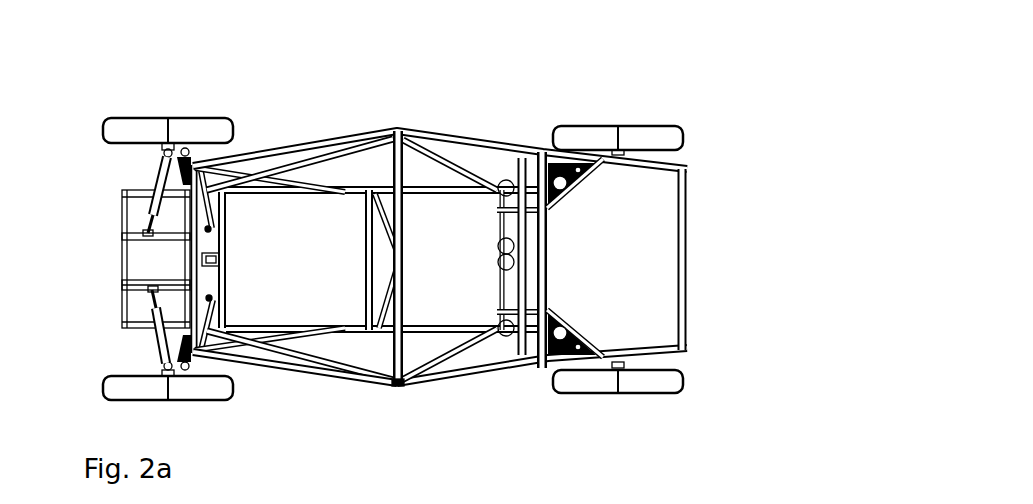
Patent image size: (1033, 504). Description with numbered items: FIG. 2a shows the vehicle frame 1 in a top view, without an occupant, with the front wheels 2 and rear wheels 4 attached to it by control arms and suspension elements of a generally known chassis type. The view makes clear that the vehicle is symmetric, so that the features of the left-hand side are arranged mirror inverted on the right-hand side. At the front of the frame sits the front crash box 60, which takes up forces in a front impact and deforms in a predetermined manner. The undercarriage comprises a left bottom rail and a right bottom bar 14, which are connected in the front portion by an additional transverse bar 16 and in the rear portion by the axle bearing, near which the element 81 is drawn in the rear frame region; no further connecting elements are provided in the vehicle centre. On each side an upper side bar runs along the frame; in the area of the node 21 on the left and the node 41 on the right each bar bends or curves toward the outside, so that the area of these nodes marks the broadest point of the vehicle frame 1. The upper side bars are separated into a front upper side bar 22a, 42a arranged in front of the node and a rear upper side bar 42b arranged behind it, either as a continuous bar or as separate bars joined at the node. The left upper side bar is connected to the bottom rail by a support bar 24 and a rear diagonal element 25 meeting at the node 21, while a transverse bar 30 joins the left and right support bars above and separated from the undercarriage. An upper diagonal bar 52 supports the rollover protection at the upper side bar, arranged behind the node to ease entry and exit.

The vehicle frame 1 is at (669, 64).
The front wheels 2 is at (193, 392).
The rear wheels 4 is at (643, 384).
The right bottom bar 14 is at (437, 195).
The transverse bar 16 is at (229, 293).
The node 21 is at (392, 386).
The front upper side bar 22a is at (325, 366).
The support bar 24 is at (381, 383).
The rear diagonal element 25 is at (468, 355).
The transverse bar 30 is at (403, 317).
The node 41 is at (393, 127).
The front upper side bar 42a is at (325, 152).
The rear upper side bar 42b is at (440, 145).
The upper diagonal bar 52 is at (445, 383).
The front crash box 60 is at (112, 269).
The spring mount 81 is at (508, 295).